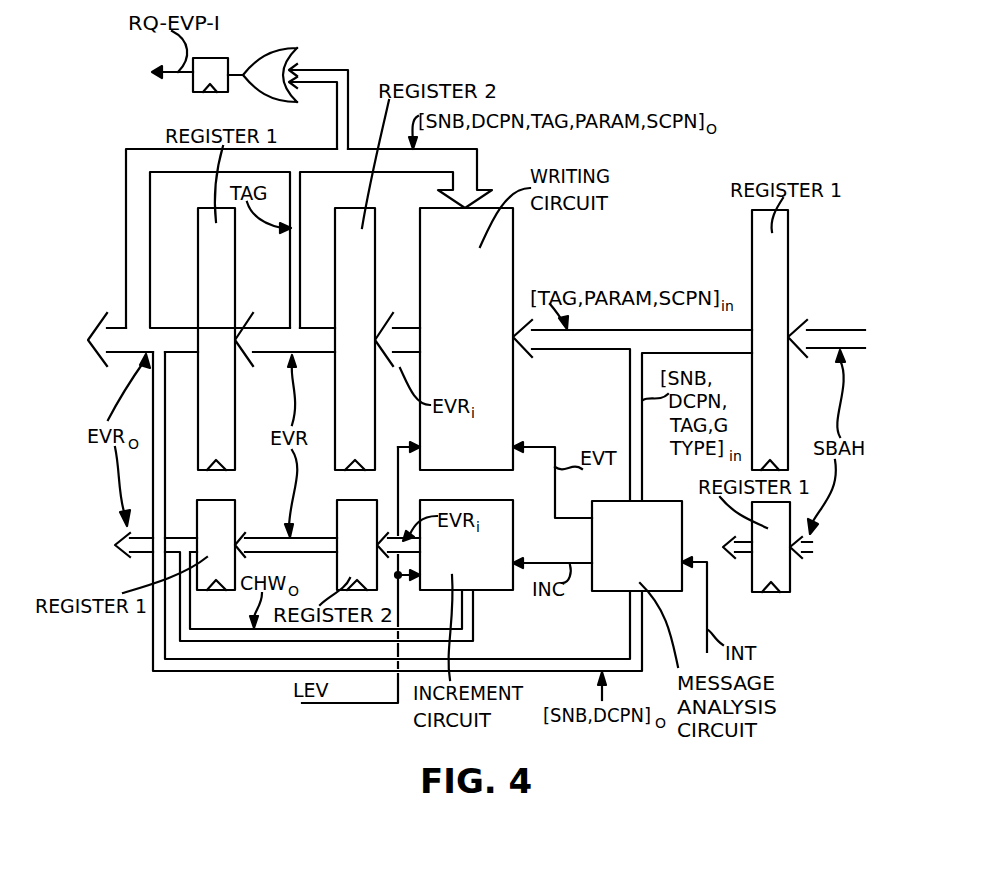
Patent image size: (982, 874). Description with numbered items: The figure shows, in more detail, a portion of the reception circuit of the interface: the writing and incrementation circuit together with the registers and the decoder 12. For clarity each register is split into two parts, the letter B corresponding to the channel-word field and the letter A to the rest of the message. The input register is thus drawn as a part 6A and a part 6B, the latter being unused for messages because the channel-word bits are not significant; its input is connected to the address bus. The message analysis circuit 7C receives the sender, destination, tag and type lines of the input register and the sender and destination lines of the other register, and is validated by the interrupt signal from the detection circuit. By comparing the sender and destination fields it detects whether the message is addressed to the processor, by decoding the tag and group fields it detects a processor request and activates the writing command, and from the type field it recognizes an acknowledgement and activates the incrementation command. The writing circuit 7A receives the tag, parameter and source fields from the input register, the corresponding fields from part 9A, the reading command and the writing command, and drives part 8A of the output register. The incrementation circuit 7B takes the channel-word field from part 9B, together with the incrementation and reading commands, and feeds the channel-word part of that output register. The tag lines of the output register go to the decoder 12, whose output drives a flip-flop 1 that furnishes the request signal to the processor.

The flip-flop 1 is at (197, 75).
The decoder 12 is at (273, 58).
The part A of register 9 9A is at (198, 221).
The part A of register 8 8A is at (335, 213).
The writing circuit 7A is at (513, 267).
The part A of input register 6 6A is at (752, 258).
The part B of register 9 9B is at (235, 530).
The incrementation circuit 7B is at (487, 592).
The message analysis circuit 7C is at (618, 591).
The part B of input register 6 6B is at (752, 580).